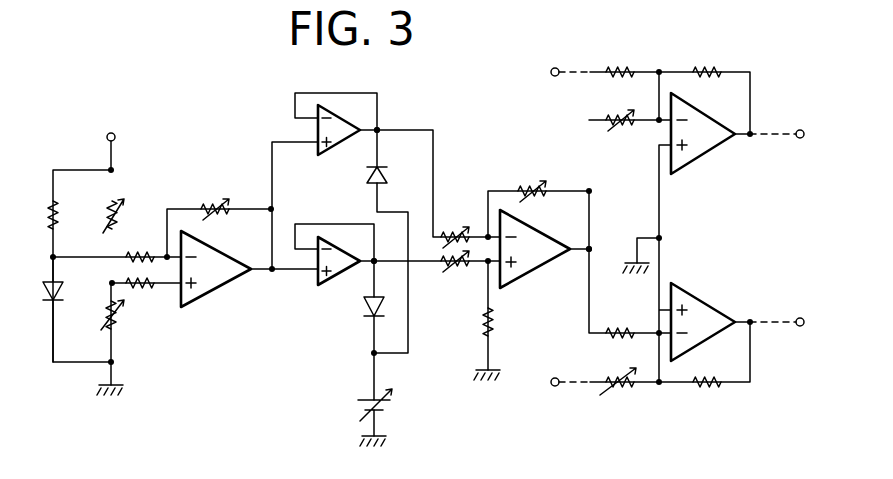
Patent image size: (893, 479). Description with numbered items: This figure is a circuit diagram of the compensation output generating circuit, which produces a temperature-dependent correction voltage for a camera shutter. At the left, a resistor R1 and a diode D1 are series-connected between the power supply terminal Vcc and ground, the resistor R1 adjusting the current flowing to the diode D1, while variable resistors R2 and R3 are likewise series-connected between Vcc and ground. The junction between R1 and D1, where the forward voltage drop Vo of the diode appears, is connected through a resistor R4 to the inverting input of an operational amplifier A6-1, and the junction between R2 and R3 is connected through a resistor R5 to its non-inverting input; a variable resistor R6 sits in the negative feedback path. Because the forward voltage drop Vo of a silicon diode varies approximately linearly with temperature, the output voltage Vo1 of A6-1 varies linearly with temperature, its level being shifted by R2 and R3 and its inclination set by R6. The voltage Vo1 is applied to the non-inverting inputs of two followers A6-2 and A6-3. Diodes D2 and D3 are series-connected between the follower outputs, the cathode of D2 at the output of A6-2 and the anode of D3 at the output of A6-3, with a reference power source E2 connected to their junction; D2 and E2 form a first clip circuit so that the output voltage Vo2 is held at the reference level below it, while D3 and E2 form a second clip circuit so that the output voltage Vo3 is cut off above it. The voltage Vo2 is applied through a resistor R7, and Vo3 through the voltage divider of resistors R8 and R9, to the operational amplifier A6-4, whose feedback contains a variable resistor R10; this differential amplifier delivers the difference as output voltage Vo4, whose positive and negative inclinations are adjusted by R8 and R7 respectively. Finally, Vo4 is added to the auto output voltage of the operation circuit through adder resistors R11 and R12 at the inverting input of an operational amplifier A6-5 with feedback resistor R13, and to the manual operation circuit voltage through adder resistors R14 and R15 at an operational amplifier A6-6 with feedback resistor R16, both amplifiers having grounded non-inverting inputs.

The power supply terminal Vcc is at (108, 140).
The resistor R1 is at (60, 210).
The variable resistor R2 is at (118, 203).
The variable resistor R3 is at (106, 306).
The resistor R4 is at (140, 250).
The resistor R5 is at (143, 290).
The variable resistor R6 is at (212, 203).
The resistor R7 is at (455, 231).
The resistor R8 is at (455, 267).
The resistor R9 is at (496, 330).
The variable resistor R10 is at (530, 185).
The adder resistor R11 is at (620, 127).
The adder resistor R12 is at (619, 67).
The resistor R13 is at (705, 67).
The adder resistor R14 is at (620, 327).
The adder resistor R15 is at (619, 390).
The resistor R16 is at (710, 390).
The diode D1 is at (57, 312).
The diode D2 is at (385, 177).
The diode D3 is at (366, 312).
The reference power source E2 is at (385, 406).
The forward voltage drop Vo is at (56, 254).
The output voltage Vo1 is at (271, 273).
The output voltage Vo2 is at (378, 127).
The output voltage Vo3 is at (369, 265).
The output voltage Vo4 is at (592, 246).
The operational amplifier A6-1 is at (210, 306).
The follower A6-2 is at (330, 154).
The follower A6-3 is at (336, 240).
The operational amplifier A6-4 is at (536, 282).
The operational amplifier A6-5 is at (702, 160).
The operational amplifier A6-6 is at (706, 300).